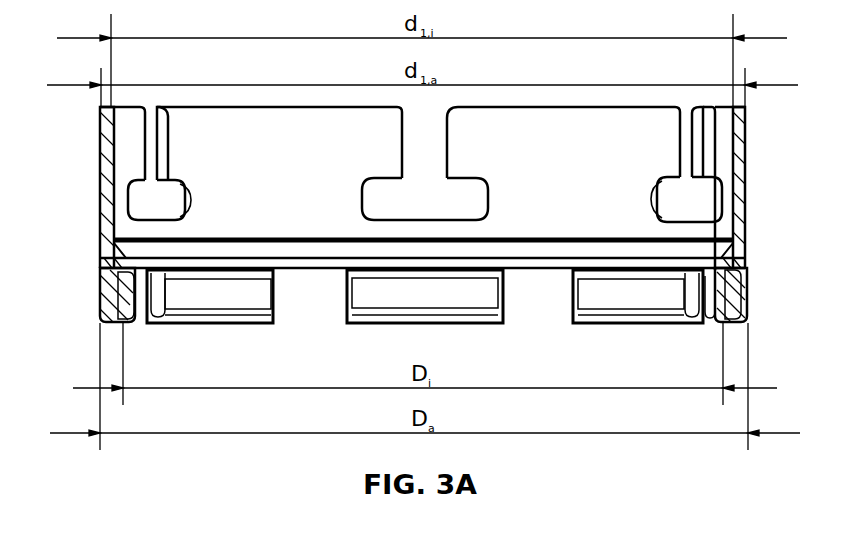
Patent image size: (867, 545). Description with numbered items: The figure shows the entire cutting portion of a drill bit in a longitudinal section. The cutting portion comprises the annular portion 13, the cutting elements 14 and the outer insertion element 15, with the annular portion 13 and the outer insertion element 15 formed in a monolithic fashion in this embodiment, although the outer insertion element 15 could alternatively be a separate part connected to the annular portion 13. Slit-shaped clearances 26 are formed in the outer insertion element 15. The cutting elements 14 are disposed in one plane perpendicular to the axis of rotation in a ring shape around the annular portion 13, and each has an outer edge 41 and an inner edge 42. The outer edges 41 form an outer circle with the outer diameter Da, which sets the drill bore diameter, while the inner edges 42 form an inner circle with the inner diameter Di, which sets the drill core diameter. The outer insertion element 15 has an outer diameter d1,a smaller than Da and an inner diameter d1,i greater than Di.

The annular portion 13 is at (105, 261).
The cutting elements 14 is at (213, 285).
The outer insertion element 15 is at (100, 172).
The slit-shaped clearance 26 is at (432, 173).
The outer edge 41 is at (750, 285).
The inner edge 42 is at (712, 306).